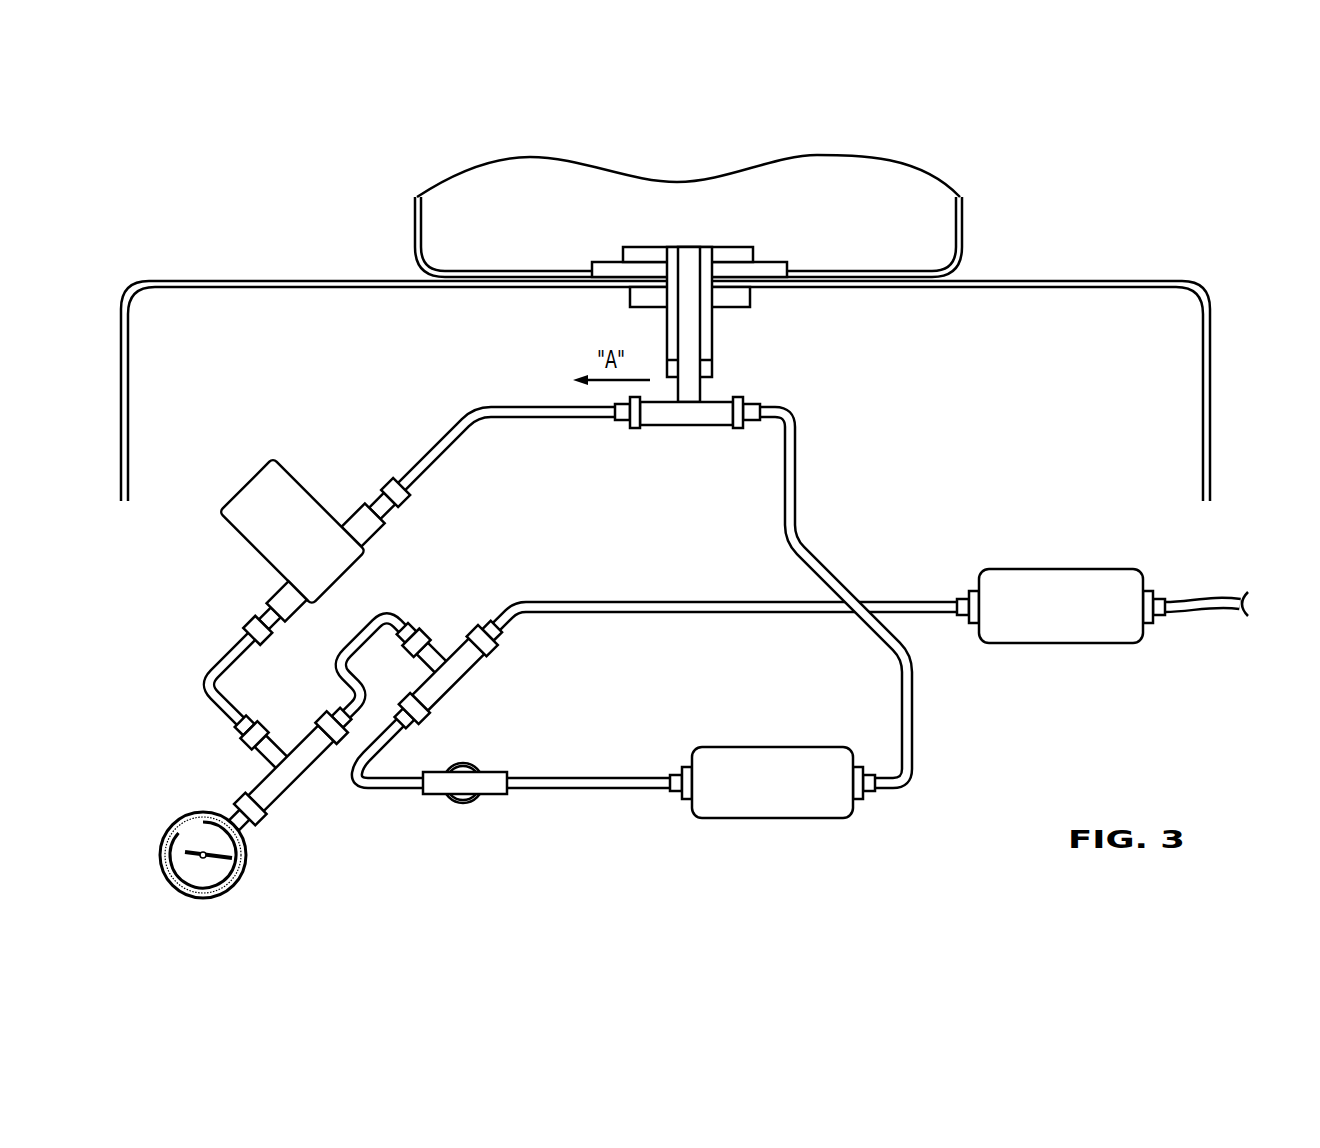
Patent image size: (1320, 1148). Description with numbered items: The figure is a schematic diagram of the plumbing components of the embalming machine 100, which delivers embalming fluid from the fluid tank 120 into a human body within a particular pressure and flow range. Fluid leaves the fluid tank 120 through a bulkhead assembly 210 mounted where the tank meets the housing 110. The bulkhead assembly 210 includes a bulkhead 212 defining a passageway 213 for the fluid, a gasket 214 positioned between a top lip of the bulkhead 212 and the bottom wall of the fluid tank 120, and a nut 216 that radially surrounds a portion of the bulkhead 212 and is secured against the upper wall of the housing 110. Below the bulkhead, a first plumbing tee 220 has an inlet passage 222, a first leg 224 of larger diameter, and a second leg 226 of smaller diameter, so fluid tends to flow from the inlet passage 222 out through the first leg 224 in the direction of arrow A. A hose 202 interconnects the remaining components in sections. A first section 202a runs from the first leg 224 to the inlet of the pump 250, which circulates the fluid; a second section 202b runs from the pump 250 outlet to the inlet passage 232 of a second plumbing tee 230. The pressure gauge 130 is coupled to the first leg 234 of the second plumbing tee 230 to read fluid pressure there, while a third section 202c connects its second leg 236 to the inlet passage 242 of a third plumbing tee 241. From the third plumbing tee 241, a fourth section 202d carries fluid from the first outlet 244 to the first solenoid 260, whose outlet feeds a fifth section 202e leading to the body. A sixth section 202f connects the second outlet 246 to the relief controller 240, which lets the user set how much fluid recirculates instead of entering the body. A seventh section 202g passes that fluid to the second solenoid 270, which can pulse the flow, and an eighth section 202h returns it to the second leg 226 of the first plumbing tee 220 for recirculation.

The embalming machine 100 is at (227, 124).
The housing 110 is at (1214, 316).
The fluid tank 120 is at (964, 210).
The pressure gauge 130 is at (178, 818).
The hose 202 is at (557, 839).
The first section 202a is at (490, 412).
The second section 202b is at (222, 663).
The third section 202c is at (365, 630).
The fourth section 202d is at (600, 603).
The fifth section 202e is at (1190, 602).
The sixth section 202f is at (398, 788).
The seventh section 202g is at (517, 793).
The eighth section 202h is at (913, 742).
The bulkhead assembly 210 is at (748, 226).
The bulkhead 212 is at (632, 248).
The passageway 213 is at (687, 263).
The gasket 214 is at (603, 267).
The nut 216 is at (630, 302).
The first plumbing tee 220 is at (713, 408).
The inlet passage 222 is at (690, 370).
The first leg 224 is at (641, 420).
The second leg 226 is at (727, 420).
The second plumbing tee 230 is at (293, 770).
The inlet passage 232 is at (250, 748).
The first leg 234 is at (270, 813).
The second leg 236 is at (325, 742).
The relief controller 240 is at (463, 777).
The third plumbing tee 241 is at (450, 677).
The inlet passage 242 is at (427, 633).
The first outlet 244 is at (460, 640).
The second outlet 246 is at (422, 709).
The pump 250 is at (258, 488).
The first solenoid 260 is at (1037, 583).
The second solenoid 270 is at (754, 757).